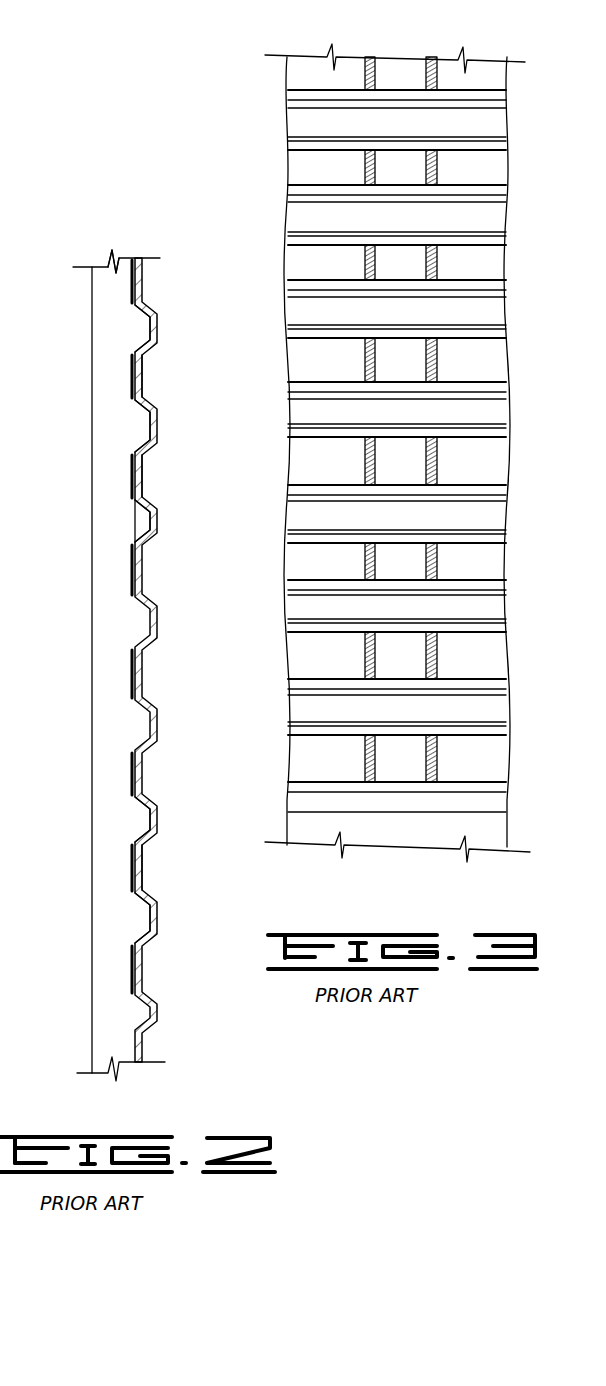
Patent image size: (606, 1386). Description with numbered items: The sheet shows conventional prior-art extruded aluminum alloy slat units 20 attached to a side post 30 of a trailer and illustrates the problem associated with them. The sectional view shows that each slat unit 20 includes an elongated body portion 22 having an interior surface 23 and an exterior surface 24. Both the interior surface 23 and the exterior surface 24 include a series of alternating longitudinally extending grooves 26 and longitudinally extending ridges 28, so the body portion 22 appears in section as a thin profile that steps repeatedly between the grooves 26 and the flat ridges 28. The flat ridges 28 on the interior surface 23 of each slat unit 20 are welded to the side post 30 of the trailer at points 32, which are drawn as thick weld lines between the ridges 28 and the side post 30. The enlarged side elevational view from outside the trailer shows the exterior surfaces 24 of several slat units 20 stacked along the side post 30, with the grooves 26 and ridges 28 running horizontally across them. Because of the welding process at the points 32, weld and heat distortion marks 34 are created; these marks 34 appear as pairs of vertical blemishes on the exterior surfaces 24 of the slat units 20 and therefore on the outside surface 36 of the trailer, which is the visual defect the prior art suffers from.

In FIG. 2, the slat unit 20 is at (148, 311).
In FIG. 3, the slat unit 20 is at (300, 121).
In FIG. 2, the elongated body portion 22 is at (145, 470).
In FIG. 3, the elongated body portion 22 is at (480, 175).
In FIG. 2, the interior surface 23 is at (137, 517).
In FIG. 2, the exterior surface 24 is at (145, 389).
In FIG. 3, the exterior surface 24 is at (488, 468).
In FIG. 2, the longitudinally extending groove 26 is at (146, 330).
In FIG. 3, the longitudinally extending groove 26 is at (337, 90).
In FIG. 2, the longitudinally extending ridge 28 is at (153, 342).
In FIG. 3, the longitudinally extending ridge 28 is at (482, 126).
In FIG. 2, the side post 30 is at (104, 266).
In FIG. 2, the weld point 32 is at (132, 286).
In FIG. 3, the weld and heat distortion mark 34 is at (428, 80).
In FIG. 3, the outside surface of the trailer 36 is at (337, 370).